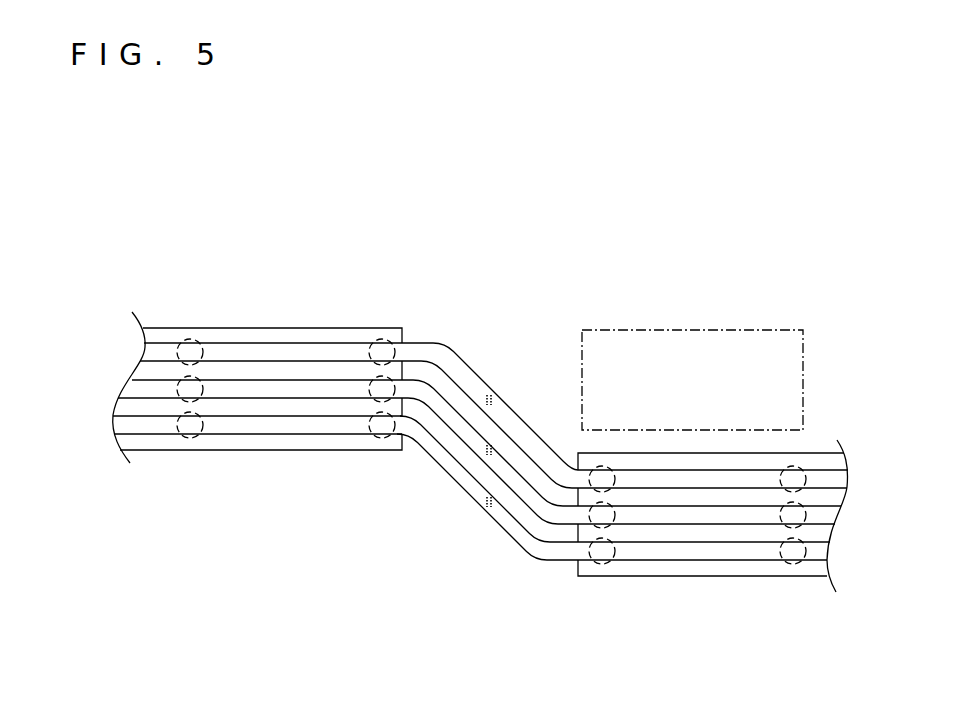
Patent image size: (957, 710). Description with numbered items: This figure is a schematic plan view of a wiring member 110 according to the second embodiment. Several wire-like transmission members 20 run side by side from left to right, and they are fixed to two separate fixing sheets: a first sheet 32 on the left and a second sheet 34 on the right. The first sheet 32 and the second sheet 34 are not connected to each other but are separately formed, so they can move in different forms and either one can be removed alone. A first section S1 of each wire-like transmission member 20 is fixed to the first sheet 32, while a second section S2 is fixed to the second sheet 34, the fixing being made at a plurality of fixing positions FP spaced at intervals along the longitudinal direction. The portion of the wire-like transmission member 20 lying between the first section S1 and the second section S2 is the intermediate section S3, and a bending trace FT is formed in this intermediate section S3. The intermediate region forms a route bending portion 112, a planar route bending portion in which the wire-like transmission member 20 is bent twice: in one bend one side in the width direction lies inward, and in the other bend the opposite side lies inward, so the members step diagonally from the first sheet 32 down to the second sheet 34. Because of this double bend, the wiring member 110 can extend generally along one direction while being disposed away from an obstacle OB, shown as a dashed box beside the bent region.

The wiring member 110 is at (233, 180).
The route bending portion 112 is at (453, 495).
The wire-like transmission member 20 is at (282, 355).
The first sheet 32 is at (306, 337).
The second sheet 34 is at (681, 578).
The fixing position FP is at (382, 438).
The bending trace FT is at (491, 406).
The first section S1 is at (213, 308).
The second section S2 is at (758, 588).
The intermediate section S3 is at (497, 358).
The obstacle OB is at (713, 330).